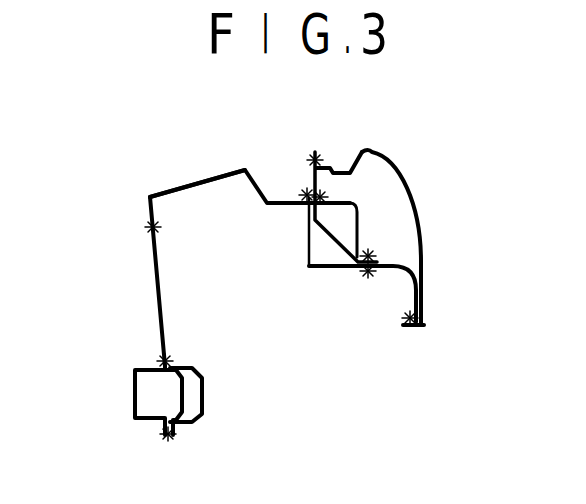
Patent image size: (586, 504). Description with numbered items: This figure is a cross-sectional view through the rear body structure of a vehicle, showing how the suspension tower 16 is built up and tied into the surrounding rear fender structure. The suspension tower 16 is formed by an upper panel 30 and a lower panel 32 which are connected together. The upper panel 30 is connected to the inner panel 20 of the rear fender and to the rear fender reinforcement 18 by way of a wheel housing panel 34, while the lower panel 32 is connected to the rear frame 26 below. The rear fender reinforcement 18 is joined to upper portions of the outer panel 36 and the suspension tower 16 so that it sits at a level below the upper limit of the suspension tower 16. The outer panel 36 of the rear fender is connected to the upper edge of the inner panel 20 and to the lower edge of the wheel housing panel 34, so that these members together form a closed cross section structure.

The suspension tower 16 is at (149, 170).
The upper panel 30 is at (198, 180).
The lower panel 32 is at (157, 268).
The inner panel 20 is at (307, 176).
The rear fender reinforcement 18 is at (360, 220).
The outer panel 36 is at (422, 247).
The wheel housing panel 34 is at (330, 270).
The rear frame 26 is at (118, 384).